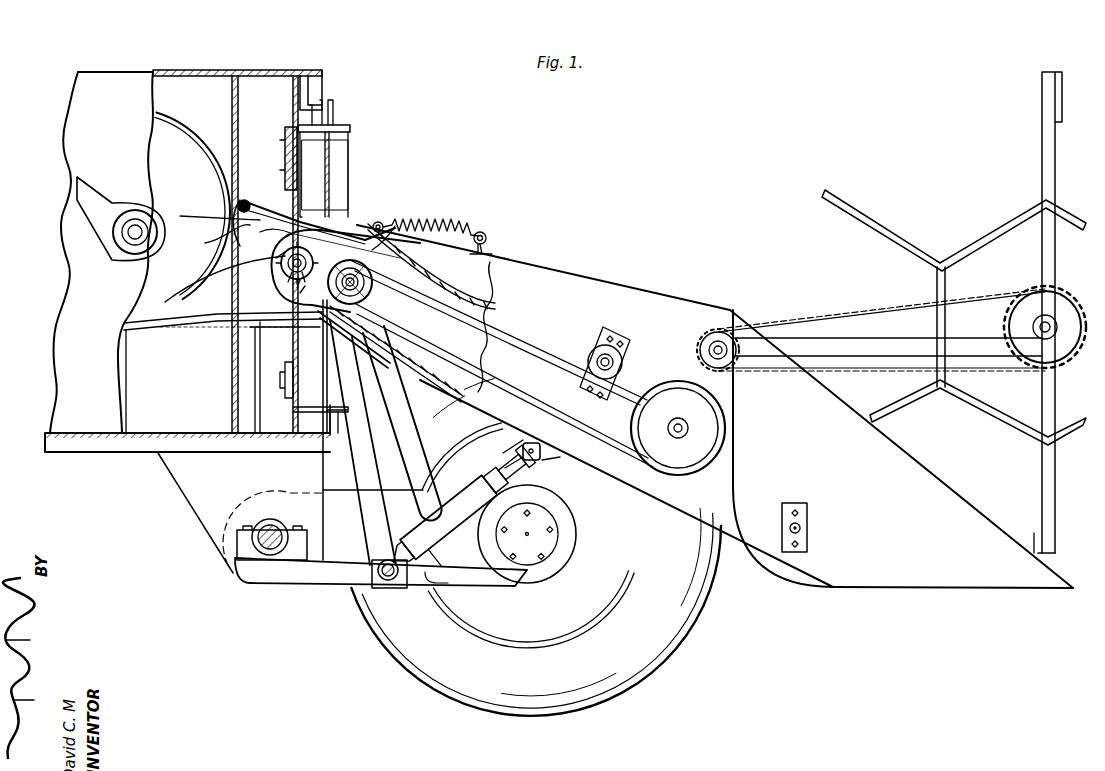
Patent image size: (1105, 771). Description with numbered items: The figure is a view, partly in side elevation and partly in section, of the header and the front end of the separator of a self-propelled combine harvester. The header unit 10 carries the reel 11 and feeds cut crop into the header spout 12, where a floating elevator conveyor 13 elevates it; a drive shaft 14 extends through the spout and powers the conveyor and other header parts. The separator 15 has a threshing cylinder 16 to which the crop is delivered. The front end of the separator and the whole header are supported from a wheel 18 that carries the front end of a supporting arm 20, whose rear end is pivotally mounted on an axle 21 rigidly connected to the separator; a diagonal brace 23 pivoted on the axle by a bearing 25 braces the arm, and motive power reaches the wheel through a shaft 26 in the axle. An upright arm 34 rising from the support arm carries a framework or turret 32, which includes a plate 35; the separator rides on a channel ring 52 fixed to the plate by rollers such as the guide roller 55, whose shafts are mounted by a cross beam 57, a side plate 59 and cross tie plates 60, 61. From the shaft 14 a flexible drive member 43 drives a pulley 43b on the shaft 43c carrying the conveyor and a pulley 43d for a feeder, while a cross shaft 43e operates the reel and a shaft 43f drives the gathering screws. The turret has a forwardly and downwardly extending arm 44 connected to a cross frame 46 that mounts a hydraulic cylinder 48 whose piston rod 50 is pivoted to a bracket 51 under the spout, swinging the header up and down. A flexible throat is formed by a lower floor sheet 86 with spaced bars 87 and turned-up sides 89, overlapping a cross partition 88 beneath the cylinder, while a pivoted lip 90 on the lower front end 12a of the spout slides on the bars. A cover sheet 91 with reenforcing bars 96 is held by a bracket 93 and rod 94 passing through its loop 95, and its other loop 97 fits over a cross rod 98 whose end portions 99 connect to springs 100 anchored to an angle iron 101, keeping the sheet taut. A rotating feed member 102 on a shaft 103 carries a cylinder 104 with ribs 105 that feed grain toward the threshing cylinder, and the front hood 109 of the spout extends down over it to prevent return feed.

The header unit 10 is at (920, 570).
The reel 11 is at (1012, 215).
The header spout 12 is at (650, 298).
The lower front end of header spout 12a is at (390, 325).
The floating elevator conveyor 13 is at (476, 294).
The drive shaft 14 is at (360, 298).
The separator 15 is at (58, 350).
The cylinder 16 is at (168, 150).
The wheel 18 is at (665, 630).
The supporting arm 20 is at (558, 568).
The axle 21 is at (240, 523).
The diagonal brace 23 is at (300, 572).
The bearing 25 is at (248, 541).
The shaft 26 is at (265, 540).
The framework (turret) 32 is at (352, 128).
The upright arm 34 is at (380, 380).
The plate 35 is at (332, 168).
The flexible drive member 43 is at (530, 372).
The pulley 43b is at (598, 360).
The shaft 43c is at (614, 362).
The pulley 43d is at (700, 448).
The cross shaft 43e is at (735, 365).
The shaft 43f is at (808, 528).
The arm 44 is at (360, 505).
The cross frame 46 is at (395, 582).
The hydraulic cylinder 48 is at (462, 522).
The piston rod 50 is at (523, 459).
The bracket 51 is at (560, 458).
The channel ring 52 is at (310, 184).
The roller 55 is at (340, 412).
The cross beam 57 is at (310, 70).
The side plate 59 is at (300, 90).
The cross tie plate 60 is at (284, 134).
The cross tie plate 61 is at (292, 410).
The flexible lower floor sheet 86 is at (262, 345).
The spaced bars 87 is at (205, 328).
The cross partition 88 is at (185, 326).
The turned-up sides 89 is at (270, 268).
The pivoted lip 90 is at (275, 328).
The cover sheet 91 is at (329, 271).
The bracket 93 is at (244, 198).
The rod 94 is at (216, 217).
The loop 95 is at (268, 197).
The reenforcing bars 96 is at (215, 239).
The loop 97 is at (375, 216).
The cross rod 98 is at (380, 248).
The end portions 99 is at (425, 223).
The springs 100 is at (486, 237).
The angle iron 101 is at (492, 252).
The rotating feed member 102 is at (306, 258).
The shaft 103 is at (308, 288).
The cylinder 104 is at (280, 258).
The ribs 105 is at (356, 270).
The front hood 109 is at (276, 231).